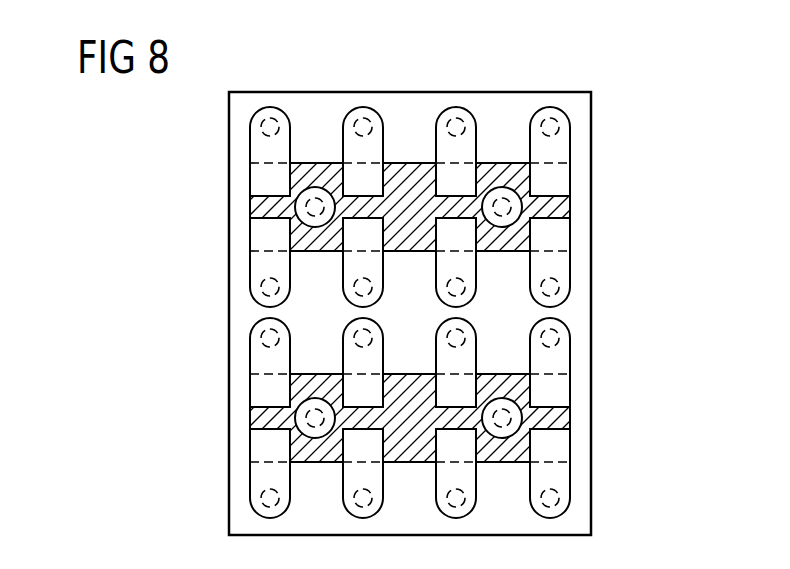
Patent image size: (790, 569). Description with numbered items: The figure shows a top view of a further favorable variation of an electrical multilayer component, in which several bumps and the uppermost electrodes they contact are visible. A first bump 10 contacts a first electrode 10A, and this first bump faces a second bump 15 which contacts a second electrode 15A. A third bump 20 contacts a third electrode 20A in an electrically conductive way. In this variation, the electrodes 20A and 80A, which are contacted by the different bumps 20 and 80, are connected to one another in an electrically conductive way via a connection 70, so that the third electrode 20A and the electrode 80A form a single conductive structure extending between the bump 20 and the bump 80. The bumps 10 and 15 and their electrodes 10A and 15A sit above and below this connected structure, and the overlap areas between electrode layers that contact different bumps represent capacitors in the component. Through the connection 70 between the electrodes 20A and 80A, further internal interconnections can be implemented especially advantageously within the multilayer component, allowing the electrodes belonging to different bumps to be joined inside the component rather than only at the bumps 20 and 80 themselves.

The first bump 10 is at (222, 118).
The first electrode 10A is at (250, 153).
The third bump 20 is at (314, 187).
The third electrode 20A is at (254, 199).
The second bump 15 is at (246, 272).
The second electrode 15A is at (252, 255).
The connection 70 is at (403, 182).
The bump 80 is at (499, 186).
The electrode 80A is at (567, 205).